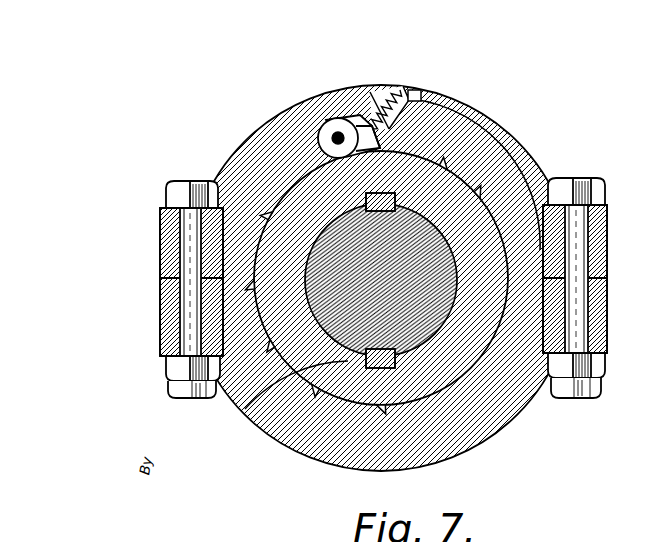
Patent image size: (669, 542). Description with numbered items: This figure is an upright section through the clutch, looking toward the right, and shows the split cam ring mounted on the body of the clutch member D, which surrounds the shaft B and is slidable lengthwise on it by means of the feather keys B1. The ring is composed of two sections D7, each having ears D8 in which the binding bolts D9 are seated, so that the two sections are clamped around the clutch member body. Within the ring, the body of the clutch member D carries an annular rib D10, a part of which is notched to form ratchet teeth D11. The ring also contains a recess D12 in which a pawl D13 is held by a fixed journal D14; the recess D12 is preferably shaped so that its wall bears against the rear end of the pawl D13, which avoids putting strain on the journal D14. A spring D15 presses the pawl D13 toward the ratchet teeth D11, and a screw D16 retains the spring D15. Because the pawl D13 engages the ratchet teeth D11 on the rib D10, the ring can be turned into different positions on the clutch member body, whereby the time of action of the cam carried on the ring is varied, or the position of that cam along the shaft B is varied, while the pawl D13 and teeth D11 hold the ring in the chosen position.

The clutch member D is at (381, 289).
The sections of split ring D7 is at (260, 118).
The ears D8 is at (152, 242).
The binding bolts D9 is at (163, 173).
The annular rib D10 is at (507, 400).
The ratchet teeth D11 is at (473, 183).
The recess D12 is at (285, 102).
The pawl D13 is at (318, 143).
The fixed journal D14 is at (320, 110).
The spring D15 is at (380, 80).
The screw D16 is at (402, 80).
The shaft B is at (470, 152).
The feather keys B1 is at (400, 147).